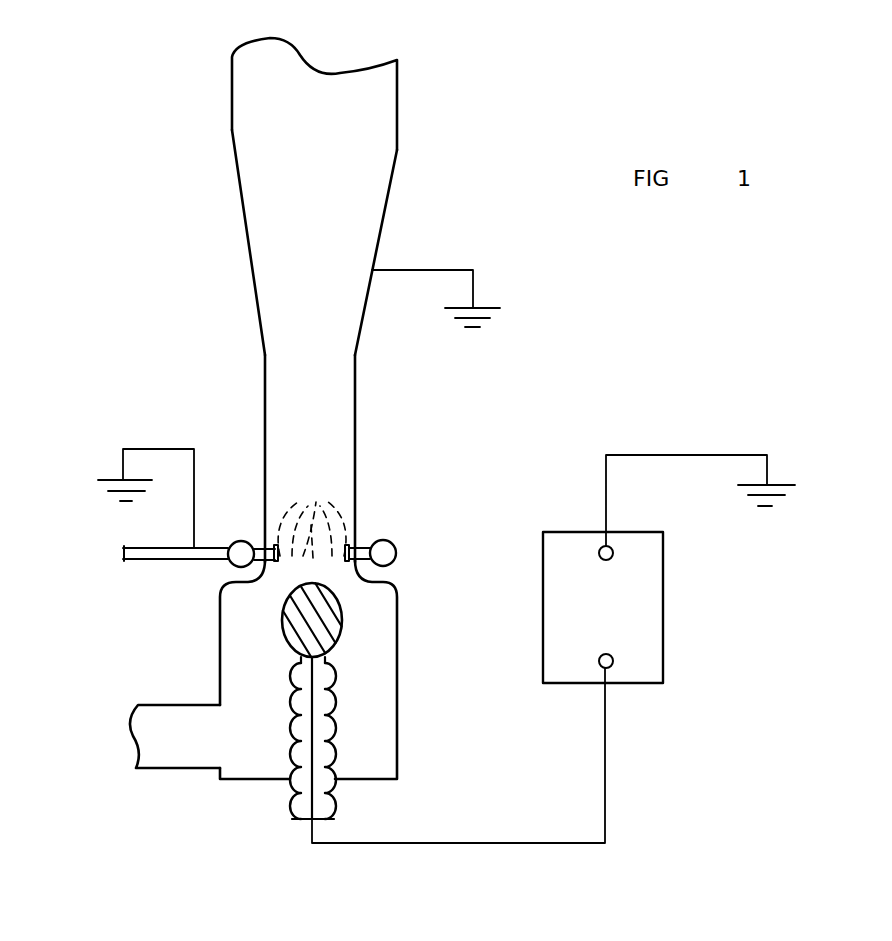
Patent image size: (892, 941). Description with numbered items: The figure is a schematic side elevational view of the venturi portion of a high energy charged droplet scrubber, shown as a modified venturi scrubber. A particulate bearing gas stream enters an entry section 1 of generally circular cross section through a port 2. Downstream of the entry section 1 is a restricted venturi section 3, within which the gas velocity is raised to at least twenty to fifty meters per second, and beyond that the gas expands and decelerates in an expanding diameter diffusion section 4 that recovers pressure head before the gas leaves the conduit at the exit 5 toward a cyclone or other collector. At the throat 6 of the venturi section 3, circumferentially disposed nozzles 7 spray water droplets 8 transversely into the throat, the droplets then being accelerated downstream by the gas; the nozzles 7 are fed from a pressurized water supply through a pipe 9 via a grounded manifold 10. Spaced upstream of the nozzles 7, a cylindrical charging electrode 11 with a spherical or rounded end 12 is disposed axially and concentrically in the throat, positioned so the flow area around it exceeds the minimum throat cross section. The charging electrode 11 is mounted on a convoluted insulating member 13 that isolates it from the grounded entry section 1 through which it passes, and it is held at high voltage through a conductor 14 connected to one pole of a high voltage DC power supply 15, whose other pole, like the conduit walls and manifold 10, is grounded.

The entry section 1 is at (403, 665).
The port 2 is at (123, 745).
The venturi section 3 is at (360, 434).
The diffusion section 4 is at (240, 242).
The gas exit 5 is at (324, 60).
The throat 6 is at (305, 566).
The nozzles 7 is at (350, 537).
The water droplets 8 is at (305, 488).
The pipe 9 is at (110, 563).
The manifold 10 is at (402, 542).
The charging electrode 11 is at (305, 621).
The end 12 is at (346, 590).
The insulating member 13 is at (338, 731).
The conductor 14 is at (300, 830).
The power supply 15 is at (670, 607).